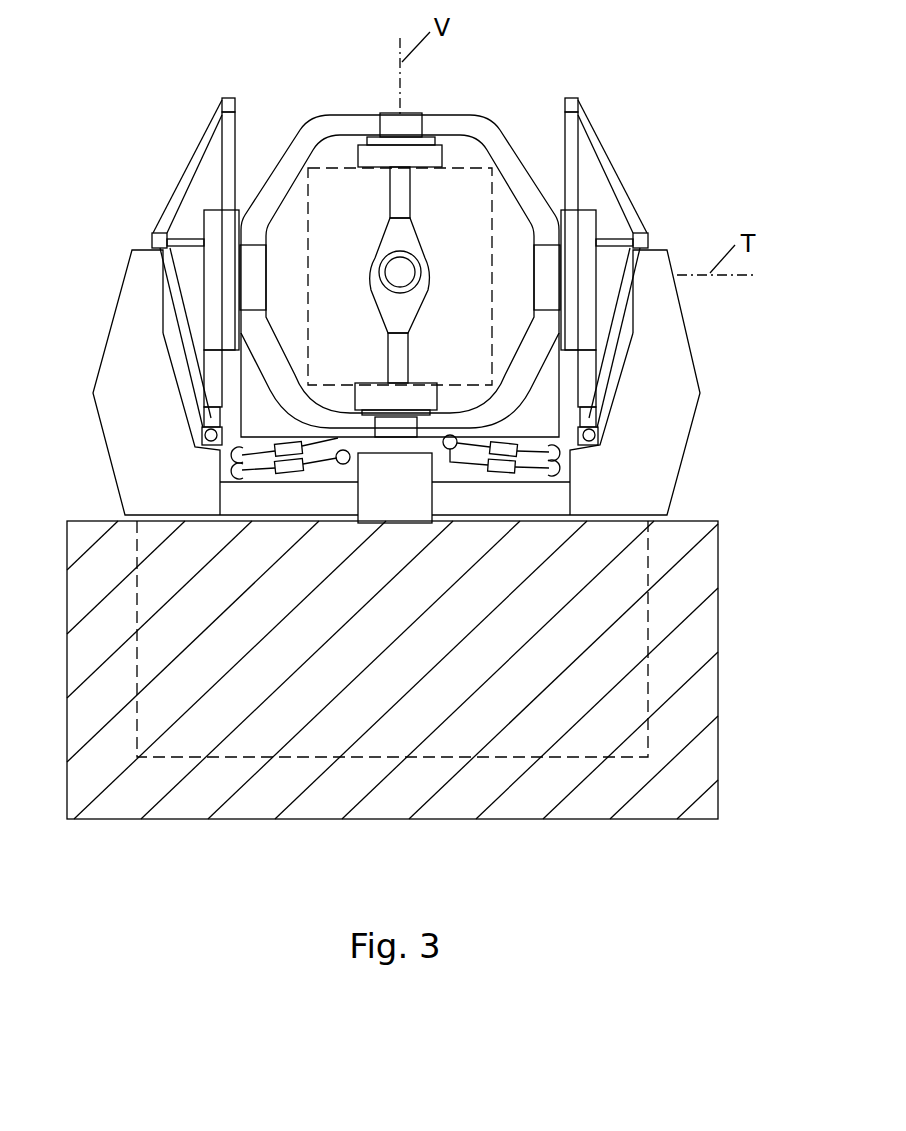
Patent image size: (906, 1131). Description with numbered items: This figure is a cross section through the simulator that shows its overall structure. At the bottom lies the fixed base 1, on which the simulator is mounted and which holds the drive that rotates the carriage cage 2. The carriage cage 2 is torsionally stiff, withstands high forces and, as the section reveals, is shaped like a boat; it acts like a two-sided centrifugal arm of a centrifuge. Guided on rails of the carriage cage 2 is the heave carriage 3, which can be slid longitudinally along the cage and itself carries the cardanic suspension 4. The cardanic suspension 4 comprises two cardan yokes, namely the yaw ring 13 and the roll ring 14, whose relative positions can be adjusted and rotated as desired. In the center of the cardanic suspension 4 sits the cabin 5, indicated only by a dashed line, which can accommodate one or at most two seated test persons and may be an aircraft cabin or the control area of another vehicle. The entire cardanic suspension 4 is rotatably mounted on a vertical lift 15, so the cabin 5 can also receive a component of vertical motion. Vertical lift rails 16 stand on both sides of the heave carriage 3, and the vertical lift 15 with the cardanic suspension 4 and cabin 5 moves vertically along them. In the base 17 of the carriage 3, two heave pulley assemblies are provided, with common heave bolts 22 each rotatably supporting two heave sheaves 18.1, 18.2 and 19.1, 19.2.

The fixed base 1 is at (578, 778).
The carriage cage 2 is at (145, 330).
The heave carriage 3 is at (160, 182).
The cardanic suspension 4 is at (318, 92).
The cabin 5 is at (308, 247).
The yaw ring 13 is at (397, 243).
The roll ring 14 is at (448, 127).
The vertical lift 15 is at (230, 268).
The vertical lift rails 16 is at (230, 133).
The base of the carriage 17 is at (660, 340).
The heave sheave 18.1 is at (233, 472).
The heave sheave 18.2 is at (227, 457).
The heave sheave 19.1 is at (550, 472).
The heave sheave 19.2 is at (560, 452).
The heave bolts 22 is at (288, 443).